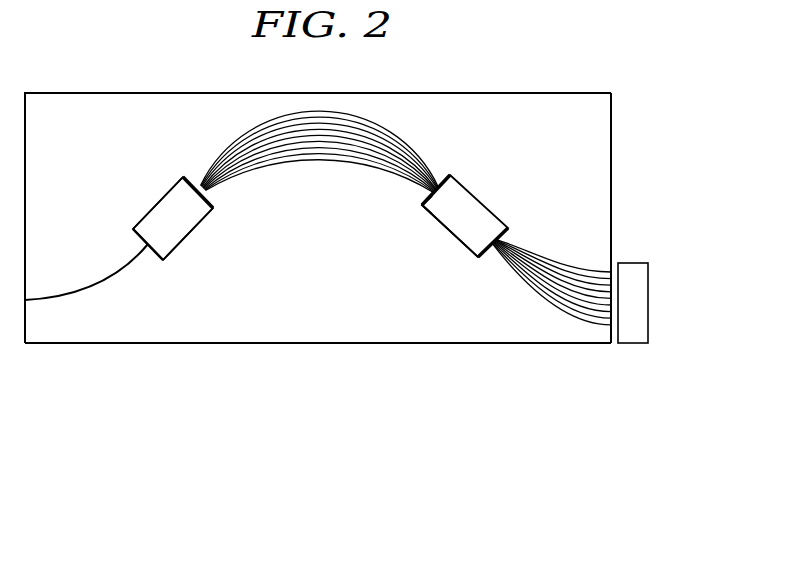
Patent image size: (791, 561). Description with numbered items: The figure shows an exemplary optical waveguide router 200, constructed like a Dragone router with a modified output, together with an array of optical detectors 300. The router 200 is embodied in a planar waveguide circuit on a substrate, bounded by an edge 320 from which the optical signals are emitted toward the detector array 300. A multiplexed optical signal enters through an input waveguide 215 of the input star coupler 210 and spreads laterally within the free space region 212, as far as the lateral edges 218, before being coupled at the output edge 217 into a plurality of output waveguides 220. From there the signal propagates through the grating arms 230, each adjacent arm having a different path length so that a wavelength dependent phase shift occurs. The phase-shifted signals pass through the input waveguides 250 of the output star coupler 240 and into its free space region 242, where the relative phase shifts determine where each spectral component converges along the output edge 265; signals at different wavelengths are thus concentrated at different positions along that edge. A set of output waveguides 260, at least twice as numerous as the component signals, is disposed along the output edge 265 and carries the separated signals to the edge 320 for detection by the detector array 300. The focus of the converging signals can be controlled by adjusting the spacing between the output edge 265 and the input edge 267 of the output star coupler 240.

The optical waveguide router 200 is at (228, 318).
The input star coupler 210 is at (168, 185).
The free space region 212 is at (162, 243).
The input waveguide 215 is at (90, 283).
The output edge 217 is at (192, 175).
The lateral edges 218 is at (157, 202).
The output waveguides 220 is at (217, 189).
The grating arms 230 is at (355, 113).
The output star coupler 240 is at (488, 202).
The free space region 242 is at (450, 217).
The input waveguides 250 is at (438, 167).
The output waveguides 260 is at (588, 268).
The output edge 265 is at (485, 247).
The input edge 267 is at (420, 197).
The array of optical detectors 300 is at (633, 338).
The edge 320 is at (612, 122).